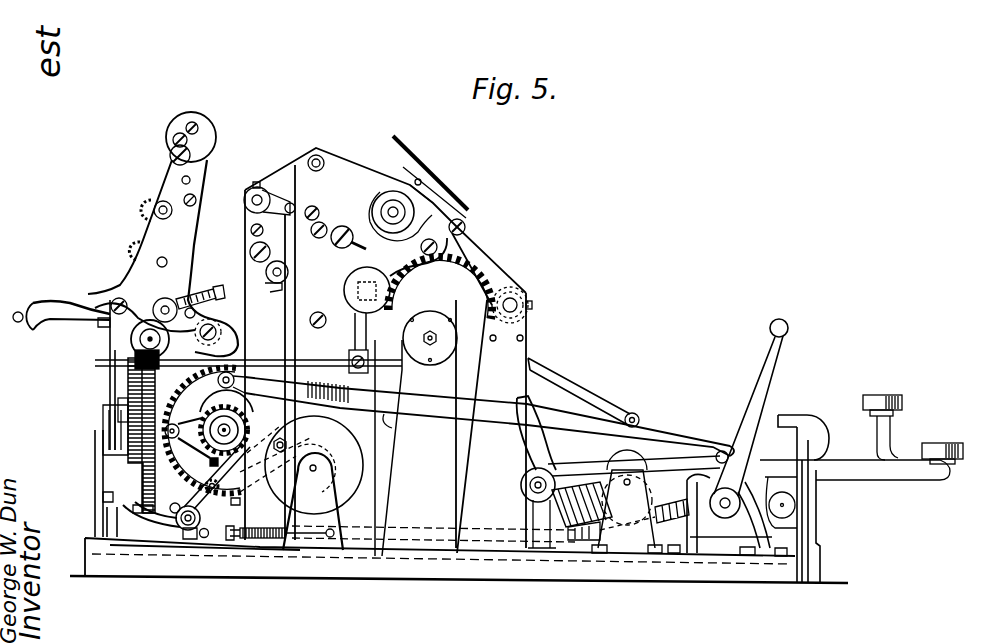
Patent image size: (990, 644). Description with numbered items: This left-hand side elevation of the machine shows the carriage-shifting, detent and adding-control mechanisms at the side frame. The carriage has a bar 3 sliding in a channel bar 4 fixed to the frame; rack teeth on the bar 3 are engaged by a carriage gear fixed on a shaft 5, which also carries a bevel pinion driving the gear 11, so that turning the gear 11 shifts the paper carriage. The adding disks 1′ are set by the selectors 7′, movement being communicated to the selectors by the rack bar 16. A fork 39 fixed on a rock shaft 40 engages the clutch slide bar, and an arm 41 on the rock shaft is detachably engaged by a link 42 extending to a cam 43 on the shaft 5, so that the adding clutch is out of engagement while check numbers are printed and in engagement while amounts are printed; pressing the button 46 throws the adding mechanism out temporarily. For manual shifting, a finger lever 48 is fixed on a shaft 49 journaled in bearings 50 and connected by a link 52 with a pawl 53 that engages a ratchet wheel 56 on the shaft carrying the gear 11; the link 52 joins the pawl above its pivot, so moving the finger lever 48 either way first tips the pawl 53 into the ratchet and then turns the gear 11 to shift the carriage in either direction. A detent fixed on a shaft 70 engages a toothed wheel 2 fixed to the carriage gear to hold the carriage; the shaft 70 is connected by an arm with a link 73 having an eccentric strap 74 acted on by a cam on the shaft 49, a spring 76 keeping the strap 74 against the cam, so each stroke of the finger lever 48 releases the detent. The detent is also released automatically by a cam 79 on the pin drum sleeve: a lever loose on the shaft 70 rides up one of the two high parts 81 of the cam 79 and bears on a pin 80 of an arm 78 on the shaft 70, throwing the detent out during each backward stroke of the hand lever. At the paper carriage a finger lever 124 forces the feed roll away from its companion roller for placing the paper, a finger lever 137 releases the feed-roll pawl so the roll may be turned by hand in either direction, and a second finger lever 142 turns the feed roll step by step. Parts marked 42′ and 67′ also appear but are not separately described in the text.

The adding disks 1′ is at (378, 162).
The toothed wheel 2 is at (128, 457).
The bar 3 is at (130, 337).
The channel bar 4 is at (135, 352).
The shaft 5 is at (126, 410).
The selectors for the adding disks 7′ is at (457, 297).
The gear 11 is at (203, 430).
The rack bar 16 is at (590, 408).
The fork 39 is at (358, 330).
The rock shaft 40 is at (277, 362).
The arm 41 is at (128, 318).
The link 42 is at (115, 370).
The lever arm 42′ is at (100, 308).
The cam 43 is at (110, 433).
The button 46 is at (358, 279).
The finger lever 48 is at (772, 350).
The shaft 49 is at (724, 514).
The bearings 50 is at (735, 548).
The link 52 is at (592, 428).
The pawl 53 is at (244, 400).
The ratchet wheel 56 is at (249, 429).
The pivot screw 67′ is at (464, 226).
The shaft 70 is at (183, 532).
The link 73 is at (352, 531).
The eccentric strap 74 is at (694, 538).
The spring 76 is at (262, 528).
The arm 78 is at (192, 494).
The cam 79 is at (323, 452).
The pin 80 is at (215, 485).
The high part 81 is at (310, 488).
The finger lever 124 is at (205, 299).
The finger lever 137 is at (525, 396).
The second finger lever 142 is at (480, 461).